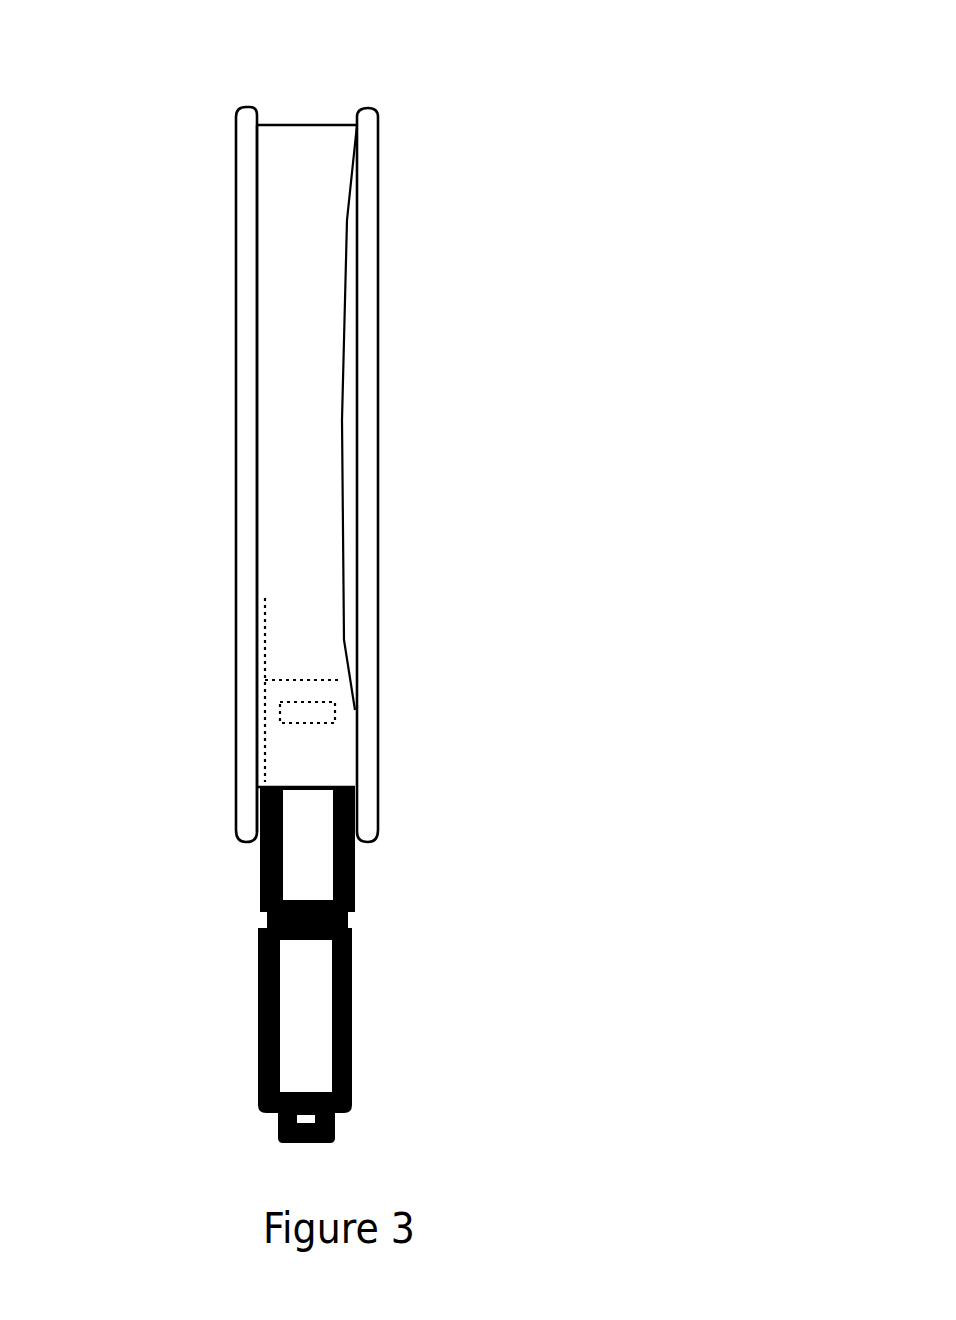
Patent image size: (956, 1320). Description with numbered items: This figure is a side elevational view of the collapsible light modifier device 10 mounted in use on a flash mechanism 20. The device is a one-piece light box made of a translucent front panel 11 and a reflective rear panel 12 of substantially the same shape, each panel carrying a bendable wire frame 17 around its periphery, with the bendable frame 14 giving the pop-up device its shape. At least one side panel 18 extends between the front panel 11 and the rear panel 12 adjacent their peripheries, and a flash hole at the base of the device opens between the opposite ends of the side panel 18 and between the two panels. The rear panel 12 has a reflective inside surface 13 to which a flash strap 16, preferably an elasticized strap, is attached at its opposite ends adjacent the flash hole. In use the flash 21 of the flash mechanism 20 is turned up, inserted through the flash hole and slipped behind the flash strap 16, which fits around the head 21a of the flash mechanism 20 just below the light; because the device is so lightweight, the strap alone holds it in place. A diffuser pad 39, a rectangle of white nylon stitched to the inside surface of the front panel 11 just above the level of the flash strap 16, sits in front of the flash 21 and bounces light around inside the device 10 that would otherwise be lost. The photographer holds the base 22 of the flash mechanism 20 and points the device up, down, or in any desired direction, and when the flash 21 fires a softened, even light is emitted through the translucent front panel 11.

The light modifier device 10 is at (585, 210).
The translucent front panel 11 is at (222, 244).
The rear panel 12 is at (395, 227).
The reflective inside surface 13 is at (345, 415).
The bendable frame 14 is at (322, 100).
The flash strap 16 is at (305, 742).
The bendable wire frame 17 is at (370, 273).
The side panel 18 is at (297, 168).
The flash mechanism 20 is at (366, 895).
The flash 21 is at (318, 712).
The head 21a is at (297, 828).
The flash mechanism base 22 is at (352, 993).
The diffuser pad 39 is at (265, 627).